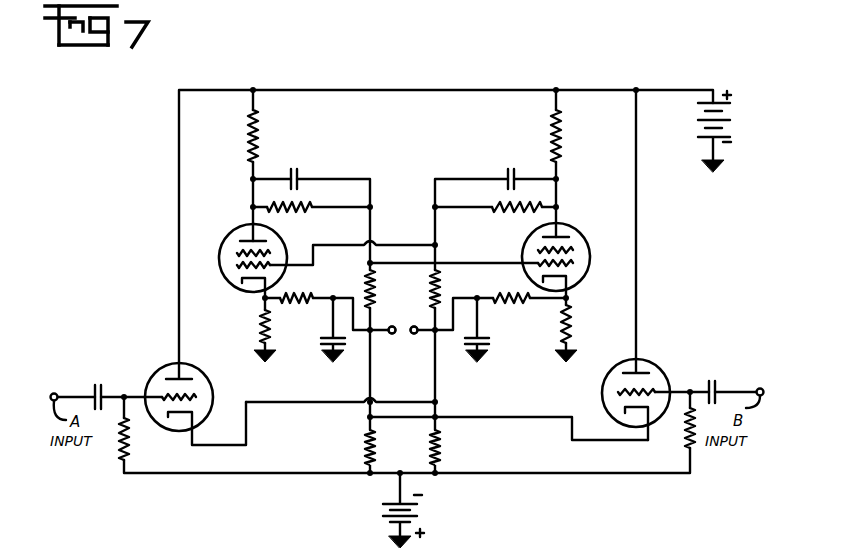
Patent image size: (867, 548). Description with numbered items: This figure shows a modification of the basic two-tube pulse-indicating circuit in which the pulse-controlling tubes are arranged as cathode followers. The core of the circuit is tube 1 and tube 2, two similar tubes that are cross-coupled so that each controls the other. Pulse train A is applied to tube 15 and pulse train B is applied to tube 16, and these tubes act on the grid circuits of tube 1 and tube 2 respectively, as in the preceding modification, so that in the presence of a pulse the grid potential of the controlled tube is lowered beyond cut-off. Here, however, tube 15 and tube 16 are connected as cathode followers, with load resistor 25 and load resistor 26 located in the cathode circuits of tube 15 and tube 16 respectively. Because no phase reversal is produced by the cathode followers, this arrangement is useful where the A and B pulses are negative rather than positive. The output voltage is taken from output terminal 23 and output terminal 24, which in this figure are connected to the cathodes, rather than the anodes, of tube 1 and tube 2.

The tube 1 is at (275, 246).
The tube 2 is at (528, 245).
The tube 15 is at (203, 388).
The tube 16 is at (602, 385).
The output terminal 23 is at (390, 327).
The output terminal 24 is at (414, 334).
The load resistor 25 is at (440, 447).
The load resistor 26 is at (365, 448).